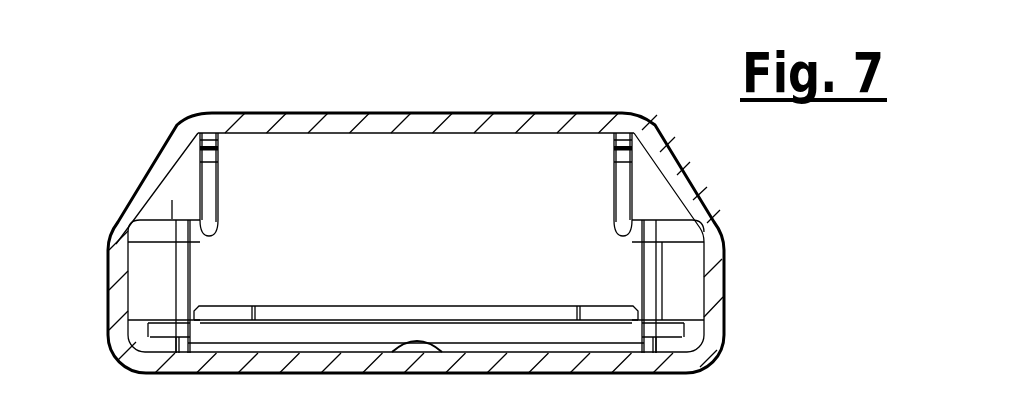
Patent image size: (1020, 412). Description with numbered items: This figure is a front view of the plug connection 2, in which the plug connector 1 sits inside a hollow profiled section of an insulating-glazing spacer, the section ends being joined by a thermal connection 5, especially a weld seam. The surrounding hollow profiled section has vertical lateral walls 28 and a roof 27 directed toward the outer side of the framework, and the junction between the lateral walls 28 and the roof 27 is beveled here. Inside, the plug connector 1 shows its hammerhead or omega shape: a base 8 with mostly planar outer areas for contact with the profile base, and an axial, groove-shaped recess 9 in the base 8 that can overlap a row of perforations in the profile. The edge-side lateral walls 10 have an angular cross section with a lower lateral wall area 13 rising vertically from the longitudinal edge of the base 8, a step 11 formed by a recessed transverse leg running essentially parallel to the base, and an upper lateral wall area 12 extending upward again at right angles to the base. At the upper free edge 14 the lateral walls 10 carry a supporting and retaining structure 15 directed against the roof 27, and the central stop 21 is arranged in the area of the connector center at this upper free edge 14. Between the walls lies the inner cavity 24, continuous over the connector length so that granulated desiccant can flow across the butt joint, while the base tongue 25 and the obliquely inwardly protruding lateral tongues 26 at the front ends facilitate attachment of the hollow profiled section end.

The plug connector 1 is at (392, 190).
The plug connection 2 is at (165, 118).
The thermal connection 5 is at (349, 113).
The base 8 is at (507, 345).
The axial groove-shaped recess 9 is at (412, 350).
The lateral walls 10 is at (416, 184).
The step 11 is at (172, 200).
The upper lateral wall area 12 is at (210, 182).
The lower lateral wall area 13 is at (130, 263).
The upper free edge 14 is at (652, 162).
The supporting and retaining structure 15 is at (236, 134).
The central stop 21 is at (208, 138).
The inner cavity 24 is at (435, 188).
The base tongue 25 is at (300, 317).
The lateral tongues 26 is at (677, 288).
The roof 27 is at (369, 126).
The lateral walls 28 is at (118, 293).